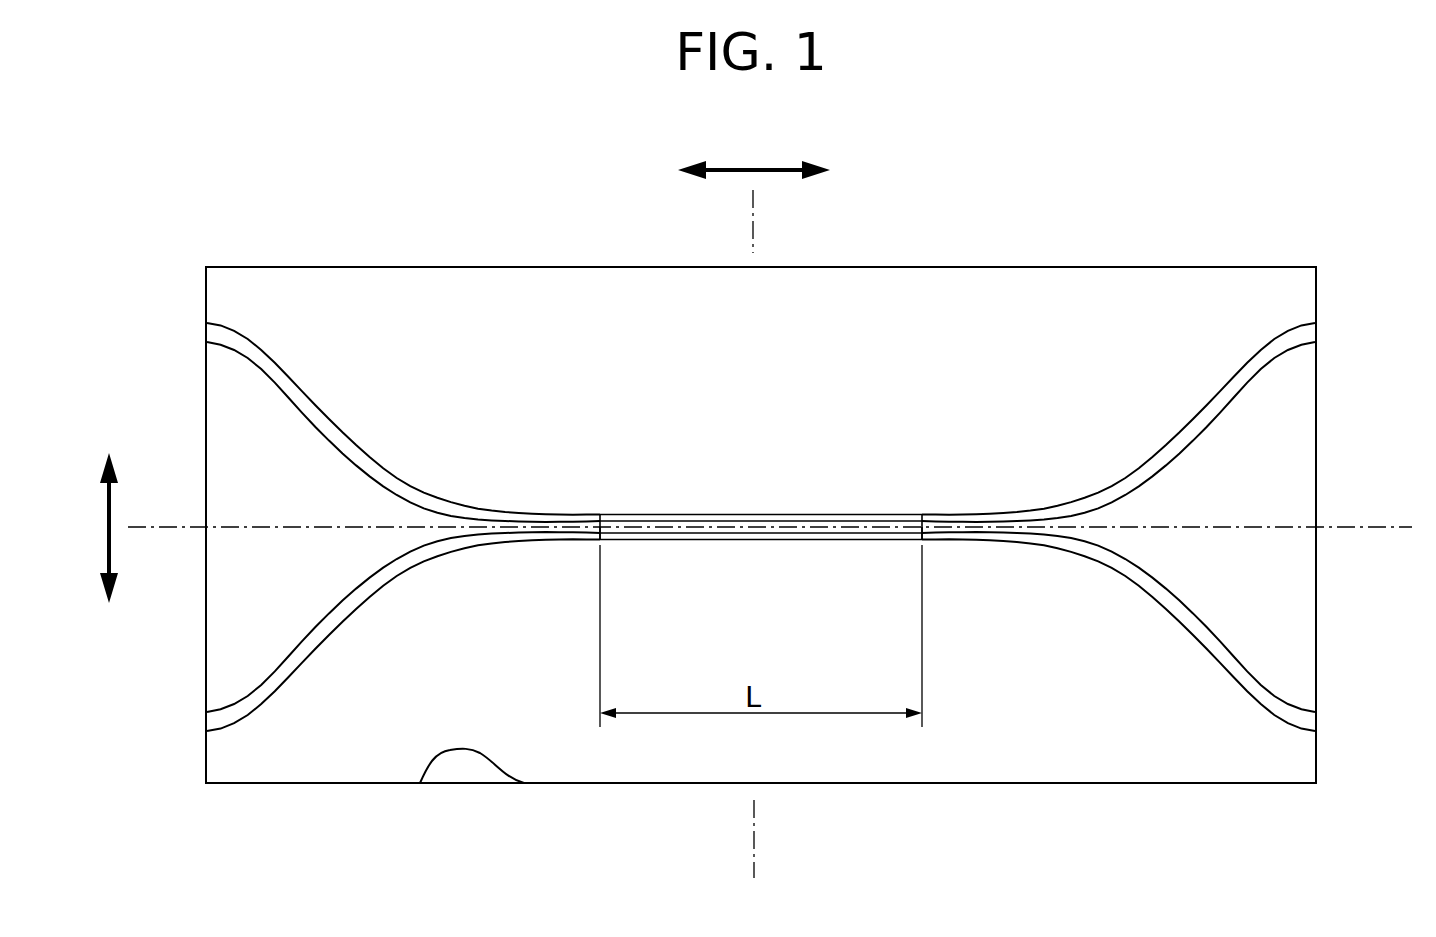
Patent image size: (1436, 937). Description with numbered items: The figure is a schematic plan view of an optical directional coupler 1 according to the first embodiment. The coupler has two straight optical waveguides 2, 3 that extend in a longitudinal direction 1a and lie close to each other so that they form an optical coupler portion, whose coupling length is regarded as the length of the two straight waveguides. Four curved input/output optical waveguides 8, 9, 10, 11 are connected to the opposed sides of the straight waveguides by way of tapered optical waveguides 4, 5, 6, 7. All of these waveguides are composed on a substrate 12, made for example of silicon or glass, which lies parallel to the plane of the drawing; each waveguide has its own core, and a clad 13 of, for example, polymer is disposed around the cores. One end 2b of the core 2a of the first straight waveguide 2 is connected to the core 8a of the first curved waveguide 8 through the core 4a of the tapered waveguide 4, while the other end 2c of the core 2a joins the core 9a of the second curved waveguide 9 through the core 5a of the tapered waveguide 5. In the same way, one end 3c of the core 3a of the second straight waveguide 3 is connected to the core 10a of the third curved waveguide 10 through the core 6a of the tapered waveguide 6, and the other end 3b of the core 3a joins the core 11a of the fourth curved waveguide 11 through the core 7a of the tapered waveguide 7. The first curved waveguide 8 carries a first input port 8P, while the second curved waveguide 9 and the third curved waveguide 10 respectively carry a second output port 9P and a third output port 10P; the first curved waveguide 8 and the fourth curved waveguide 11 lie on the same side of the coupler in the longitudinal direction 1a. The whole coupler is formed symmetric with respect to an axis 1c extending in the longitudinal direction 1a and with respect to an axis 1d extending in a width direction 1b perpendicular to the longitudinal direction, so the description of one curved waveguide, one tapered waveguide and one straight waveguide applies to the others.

The optical directional coupler 1 is at (1065, 253).
The longitudinal direction 1a is at (754, 193).
The width direction 1b is at (91, 528).
The axis 1c is at (1381, 525).
The axis 1d is at (755, 848).
The first straight optical waveguide 2 is at (780, 494).
The core of the first straight waveguide 2a is at (720, 513).
The one end of the core of the first straight waveguide 2b is at (621, 509).
The another end of the core of the first straight waveguide 2c is at (906, 509).
The second straight optical waveguide 3 is at (731, 550).
The core of the second straight waveguide 3a is at (782, 542).
The another end of the core of the second straight waveguide 3b is at (620, 552).
The one end of the core of the second straight waveguide 3c is at (906, 550).
The tapered optical waveguide 4 is at (538, 497).
The core of the tapered waveguide 4a is at (563, 508).
The tapered optical waveguide 5 is at (955, 497).
The core of the tapered waveguide 5a is at (993, 502).
The tapered optical waveguide 6 is at (953, 556).
The core of the tapered waveguide 6a is at (985, 546).
The tapered optical waveguide 7 is at (530, 562).
The core of the tapered waveguide 7a is at (558, 546).
The first curved waveguide 8 is at (348, 410).
The core of the first curved waveguide 8a is at (403, 466).
The first input port 8P is at (206, 325).
The second curved waveguide 9 is at (1185, 409).
The core of the second curved waveguide 9a is at (1138, 454).
The second output port 9P is at (1316, 323).
The third curved waveguide 10 is at (1177, 637).
The core of the third curved waveguide 10a is at (1127, 592).
The third output port 10P is at (1316, 717).
The fourth curved waveguide 11 is at (340, 650).
The core of the fourth curved waveguide 11a is at (373, 606).
The substrate 12 is at (465, 767).
The clad 13 is at (738, 348).